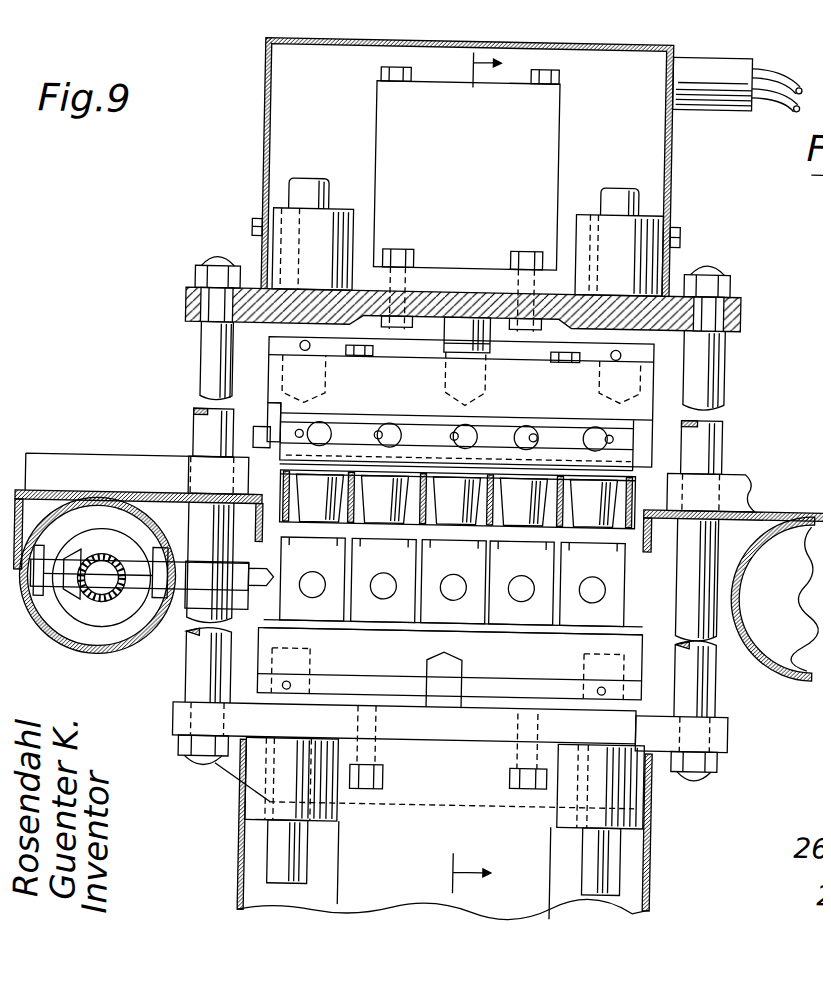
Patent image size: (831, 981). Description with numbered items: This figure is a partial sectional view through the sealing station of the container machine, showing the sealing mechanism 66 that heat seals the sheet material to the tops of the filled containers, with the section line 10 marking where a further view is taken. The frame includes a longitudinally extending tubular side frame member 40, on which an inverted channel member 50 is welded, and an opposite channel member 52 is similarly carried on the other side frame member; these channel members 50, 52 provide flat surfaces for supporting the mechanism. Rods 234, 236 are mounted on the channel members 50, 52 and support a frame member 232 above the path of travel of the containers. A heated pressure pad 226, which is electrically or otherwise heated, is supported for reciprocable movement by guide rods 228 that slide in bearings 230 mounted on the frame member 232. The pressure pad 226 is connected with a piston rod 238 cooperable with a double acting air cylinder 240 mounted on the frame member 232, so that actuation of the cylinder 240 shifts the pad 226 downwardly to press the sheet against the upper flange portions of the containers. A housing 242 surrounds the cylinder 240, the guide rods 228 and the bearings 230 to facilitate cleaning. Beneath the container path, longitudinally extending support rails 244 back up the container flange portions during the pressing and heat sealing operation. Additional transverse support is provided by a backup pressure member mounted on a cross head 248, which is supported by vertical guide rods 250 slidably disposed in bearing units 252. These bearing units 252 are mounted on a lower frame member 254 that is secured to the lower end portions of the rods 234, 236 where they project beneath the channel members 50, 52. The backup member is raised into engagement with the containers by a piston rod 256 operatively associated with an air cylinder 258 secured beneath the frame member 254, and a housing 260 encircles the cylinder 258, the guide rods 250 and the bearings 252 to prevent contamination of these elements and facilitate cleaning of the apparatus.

The section line 10 is at (414, 73).
The side frame member 40 is at (111, 657).
The channel member 50 is at (88, 497).
The channel member 52 is at (780, 504).
The sealing mechanism 66 is at (688, 391).
The heated pressure pad 226 is at (198, 430).
The guide rods 228 is at (289, 196).
The bearings 230 is at (325, 213).
The frame member 232 is at (722, 300).
The rod 234 is at (207, 348).
The rod 236 is at (712, 420).
The piston rod 238 is at (467, 345).
The double acting air cylinder 240 is at (553, 128).
The housing 242 is at (258, 144).
The support rails 244 is at (399, 519).
The cross head 248 is at (267, 661).
The vertical guide rods 250 is at (287, 862).
The bearing units 252 is at (686, 773).
The frame member 254 is at (675, 727).
The piston rod 256 is at (430, 740).
The air cylinder 258 is at (656, 902).
The housing 260 is at (658, 888).